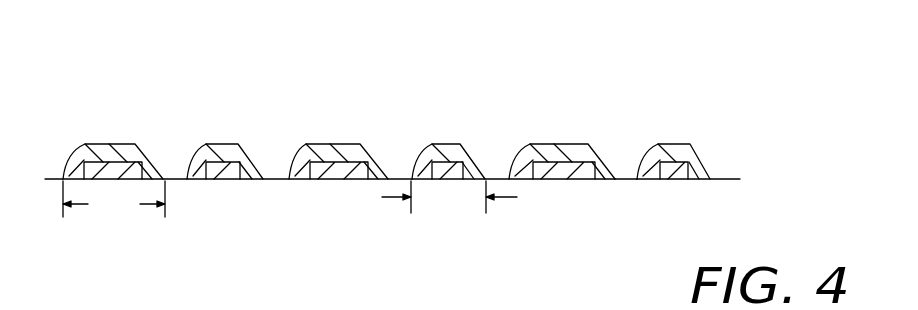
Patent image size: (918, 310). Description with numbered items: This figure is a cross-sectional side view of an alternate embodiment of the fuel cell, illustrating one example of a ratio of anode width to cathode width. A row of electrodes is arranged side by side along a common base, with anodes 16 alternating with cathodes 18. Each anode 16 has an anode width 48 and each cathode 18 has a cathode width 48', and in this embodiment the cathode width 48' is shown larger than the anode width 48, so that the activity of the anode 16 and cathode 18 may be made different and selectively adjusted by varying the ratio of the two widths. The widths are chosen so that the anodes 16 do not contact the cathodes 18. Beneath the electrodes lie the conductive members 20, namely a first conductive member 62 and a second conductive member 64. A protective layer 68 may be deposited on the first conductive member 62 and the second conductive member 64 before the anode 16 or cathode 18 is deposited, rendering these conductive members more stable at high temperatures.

The anode 16 is at (237, 145).
The cathode 18 is at (143, 145).
The conductive members 20 is at (317, 179).
The anode width 48 is at (449, 238).
The cathode width 48' is at (114, 199).
The first conductive member 62 is at (552, 179).
The second conductive member 64 is at (677, 179).
The protective layer 68 is at (650, 148).